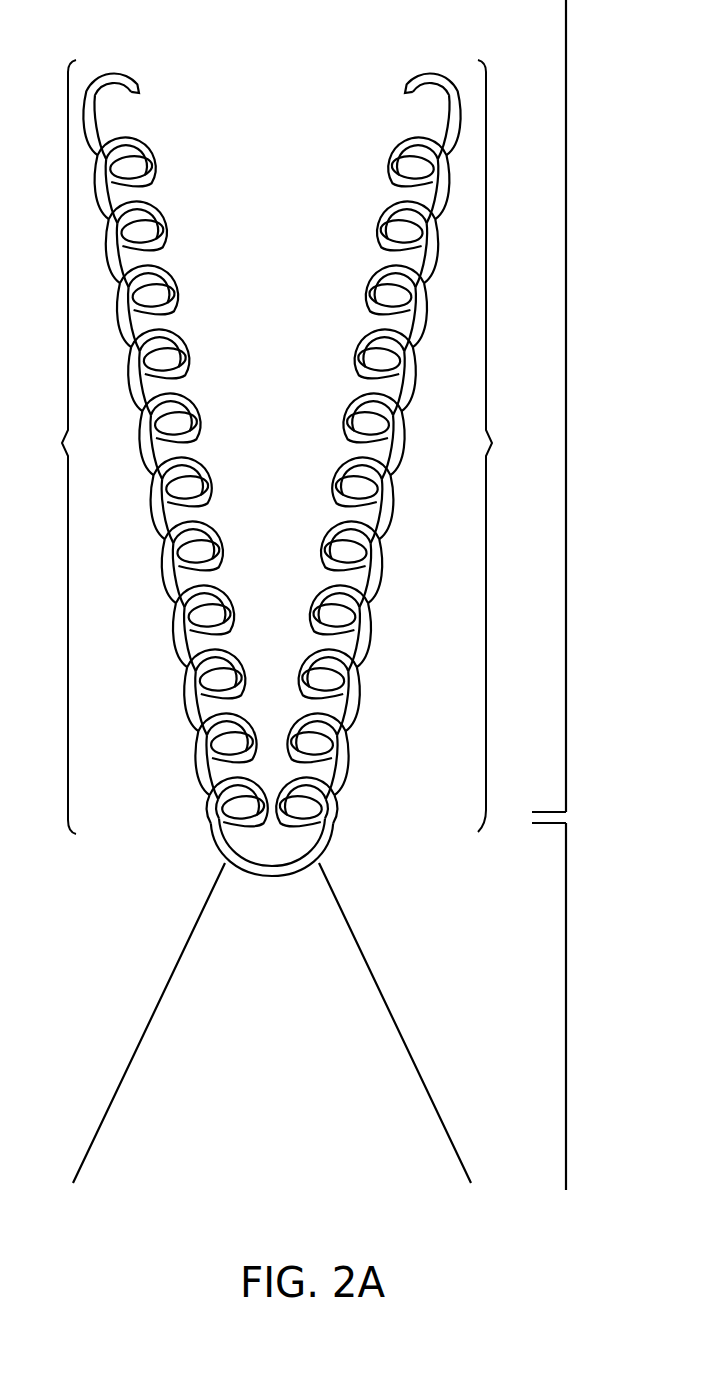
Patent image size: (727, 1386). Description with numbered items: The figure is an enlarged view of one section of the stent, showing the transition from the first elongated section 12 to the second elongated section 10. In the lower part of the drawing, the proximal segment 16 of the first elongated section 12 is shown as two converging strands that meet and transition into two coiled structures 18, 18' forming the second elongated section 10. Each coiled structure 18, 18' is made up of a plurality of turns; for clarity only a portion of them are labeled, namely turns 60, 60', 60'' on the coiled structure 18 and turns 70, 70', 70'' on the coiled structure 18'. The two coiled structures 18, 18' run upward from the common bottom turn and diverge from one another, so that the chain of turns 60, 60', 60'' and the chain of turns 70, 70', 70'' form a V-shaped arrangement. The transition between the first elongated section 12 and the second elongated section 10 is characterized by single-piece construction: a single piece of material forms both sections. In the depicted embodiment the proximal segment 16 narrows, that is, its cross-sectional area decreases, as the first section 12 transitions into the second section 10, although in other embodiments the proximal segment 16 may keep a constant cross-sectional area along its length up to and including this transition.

The second elongated section 10 is at (567, 417).
The first elongated section 12 is at (567, 1005).
The proximal segment 16 is at (431, 1094).
The coiled structure 18 is at (404, 446).
The coiled structure 18' is at (144, 447).
The turn 60 is at (413, 99).
The turn 60' is at (399, 161).
The turn 60'' is at (386, 224).
The turn 70 is at (135, 101).
The turn 70' is at (147, 167).
The turn 70'' is at (163, 231).